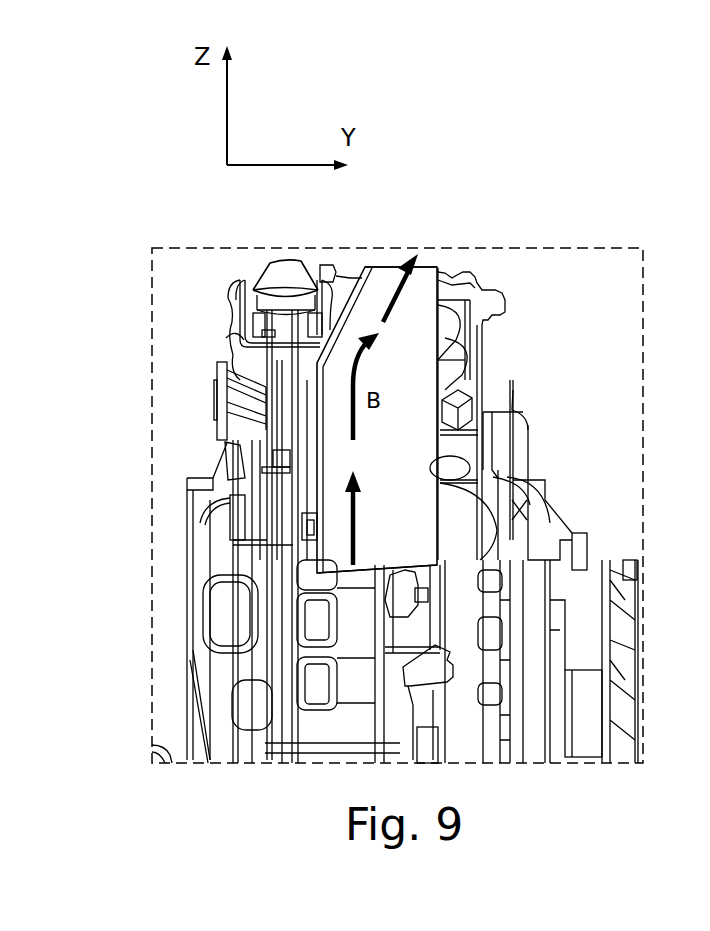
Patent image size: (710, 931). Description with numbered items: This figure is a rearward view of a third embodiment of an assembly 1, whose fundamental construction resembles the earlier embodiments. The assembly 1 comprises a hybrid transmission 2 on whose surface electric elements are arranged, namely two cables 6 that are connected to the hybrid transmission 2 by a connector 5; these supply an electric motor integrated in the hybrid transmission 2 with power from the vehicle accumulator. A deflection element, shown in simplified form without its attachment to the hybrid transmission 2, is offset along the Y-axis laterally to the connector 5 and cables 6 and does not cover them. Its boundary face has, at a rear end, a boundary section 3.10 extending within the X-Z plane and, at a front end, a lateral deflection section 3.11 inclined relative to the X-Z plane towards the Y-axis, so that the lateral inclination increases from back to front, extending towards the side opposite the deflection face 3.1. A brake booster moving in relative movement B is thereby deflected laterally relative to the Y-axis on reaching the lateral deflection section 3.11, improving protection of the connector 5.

The assembly 1 is at (501, 187).
The hybrid transmission 2 is at (513, 432).
The deflection face 3.1 is at (402, 476).
The boundary section 3.10 is at (340, 545).
The lateral deflection section 3.11 is at (356, 316).
The connector 5 is at (283, 277).
The cables 6 is at (300, 365).